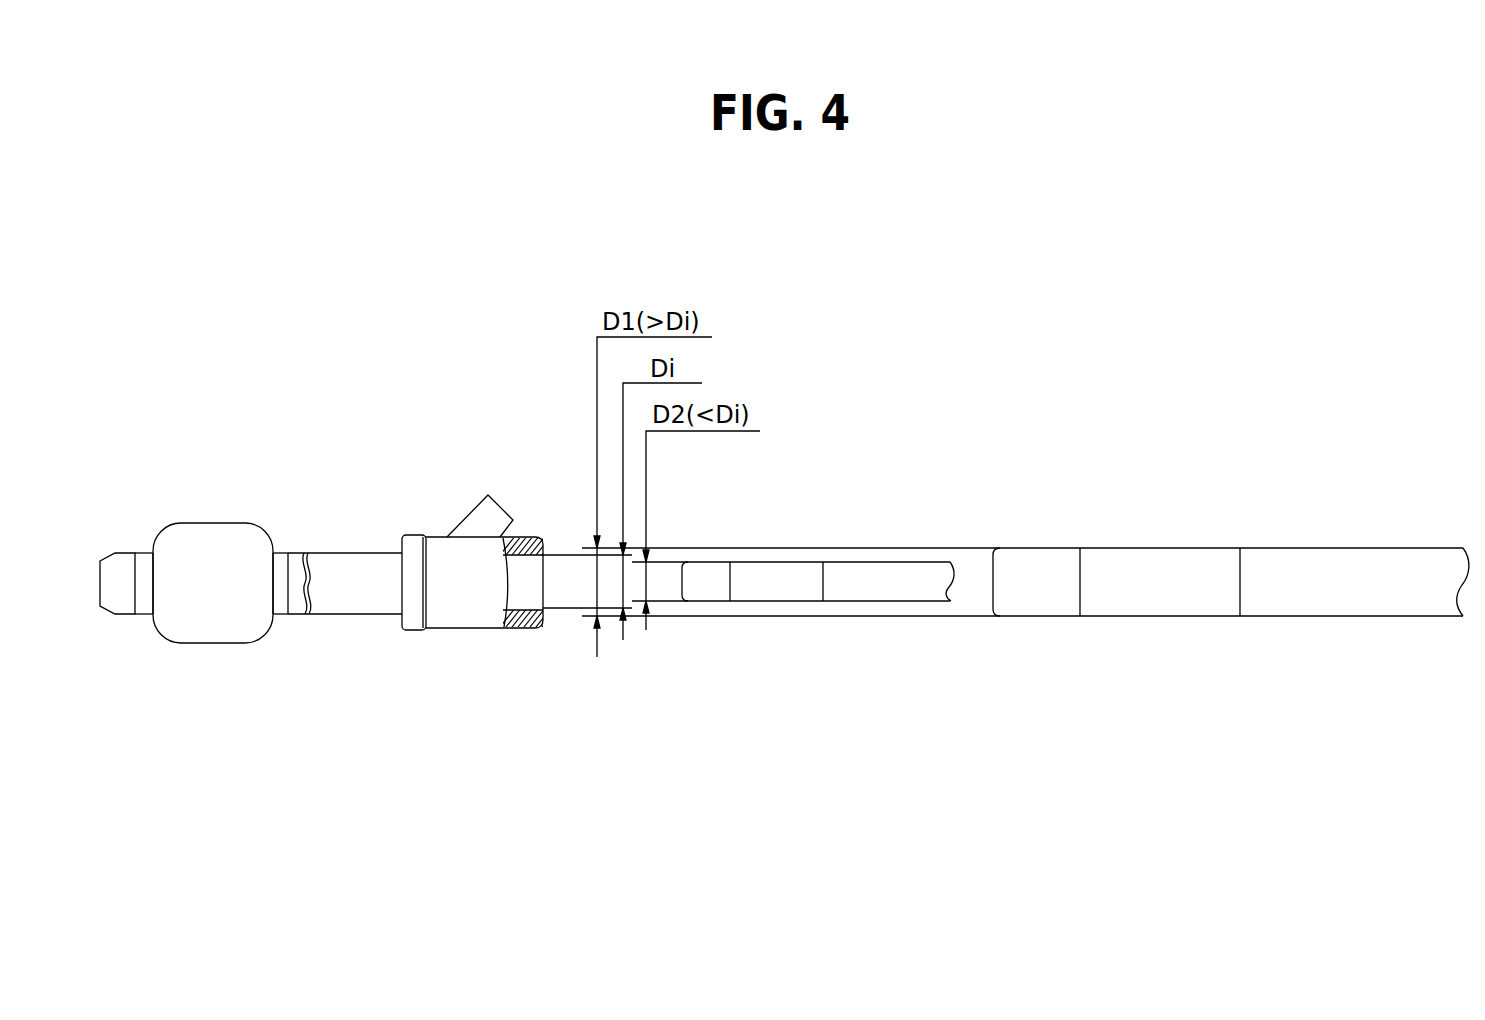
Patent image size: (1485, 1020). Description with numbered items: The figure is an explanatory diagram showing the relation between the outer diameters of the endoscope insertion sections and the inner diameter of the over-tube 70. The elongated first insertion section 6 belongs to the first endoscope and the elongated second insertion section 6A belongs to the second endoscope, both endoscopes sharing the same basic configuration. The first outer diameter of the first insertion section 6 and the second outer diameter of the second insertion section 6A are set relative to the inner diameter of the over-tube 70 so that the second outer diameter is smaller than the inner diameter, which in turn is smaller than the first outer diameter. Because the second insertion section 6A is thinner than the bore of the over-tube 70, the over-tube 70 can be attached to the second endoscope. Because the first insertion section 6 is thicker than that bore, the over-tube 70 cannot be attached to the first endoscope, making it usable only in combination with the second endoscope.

The over-tube 70 is at (343, 512).
The first insertion section 6 is at (1307, 545).
The second insertion section 6A is at (847, 560).